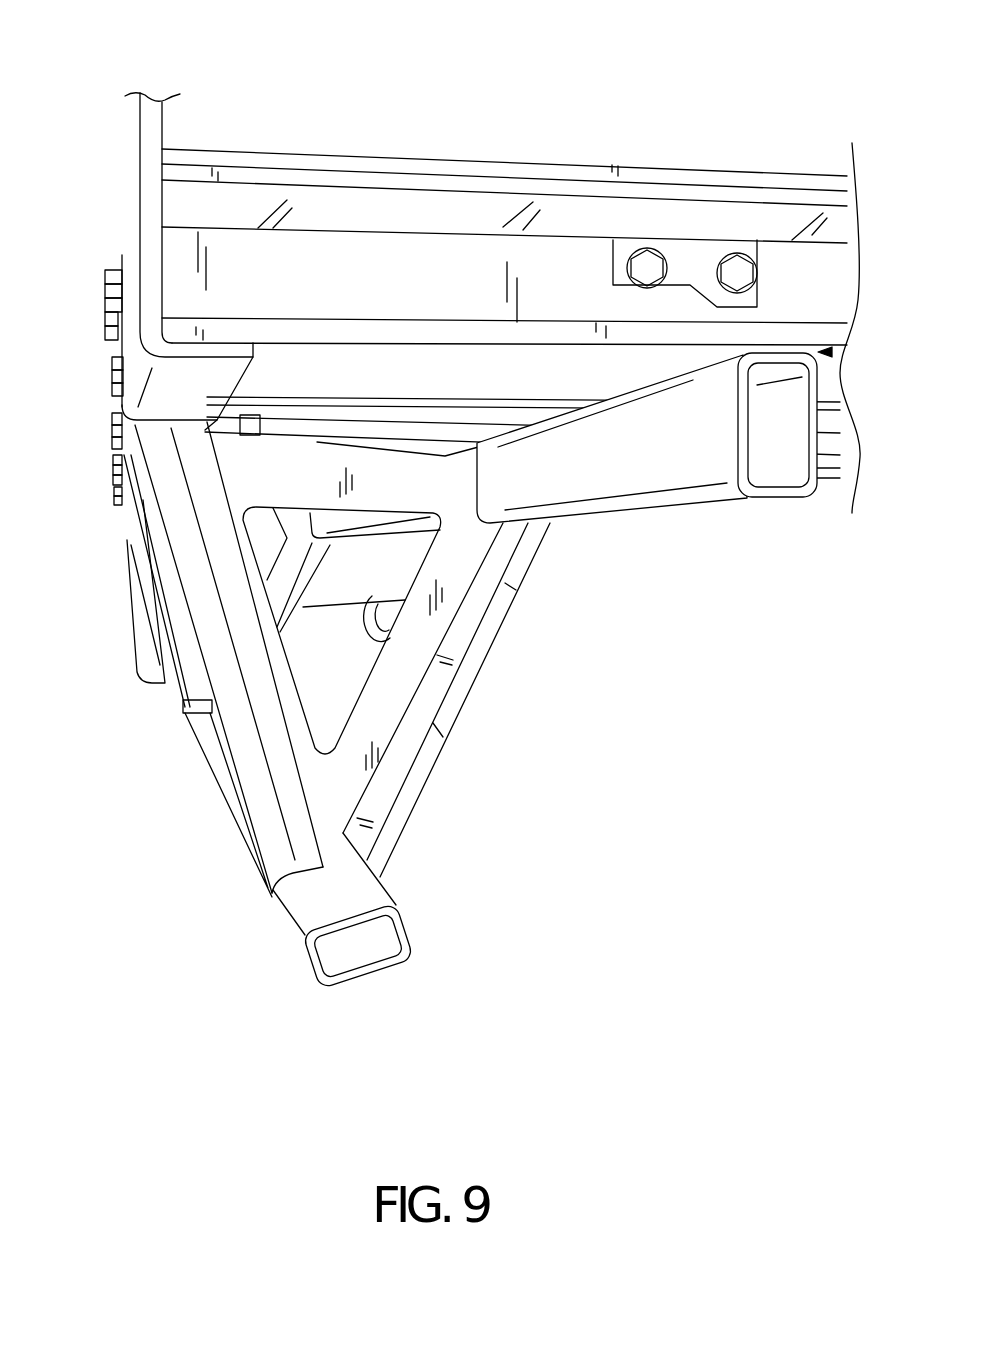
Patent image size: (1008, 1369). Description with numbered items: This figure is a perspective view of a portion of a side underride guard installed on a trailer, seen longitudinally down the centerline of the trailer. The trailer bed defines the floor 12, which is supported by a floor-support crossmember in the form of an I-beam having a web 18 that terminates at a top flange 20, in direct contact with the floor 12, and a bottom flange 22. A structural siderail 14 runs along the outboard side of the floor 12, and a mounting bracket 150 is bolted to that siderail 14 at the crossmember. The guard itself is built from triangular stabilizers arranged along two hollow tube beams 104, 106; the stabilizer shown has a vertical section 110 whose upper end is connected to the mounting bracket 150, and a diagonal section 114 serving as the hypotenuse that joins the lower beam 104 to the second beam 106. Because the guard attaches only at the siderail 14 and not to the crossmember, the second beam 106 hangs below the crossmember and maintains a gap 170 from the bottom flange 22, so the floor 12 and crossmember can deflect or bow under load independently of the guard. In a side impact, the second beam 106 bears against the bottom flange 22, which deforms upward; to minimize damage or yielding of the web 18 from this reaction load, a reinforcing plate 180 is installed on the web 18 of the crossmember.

The floor 12 is at (545, 165).
The structural siderail 14 is at (148, 230).
The web 18 is at (290, 255).
The top flange 20 is at (790, 190).
The bottom flange 22 is at (823, 325).
The beam 104 is at (293, 913).
The second beam 106 is at (698, 470).
The vertical section 110 is at (240, 675).
The diagonal section 114 is at (415, 772).
The mounting bracket 150 is at (135, 343).
The gap 170 is at (832, 353).
The reinforcing plate 180 is at (697, 262).